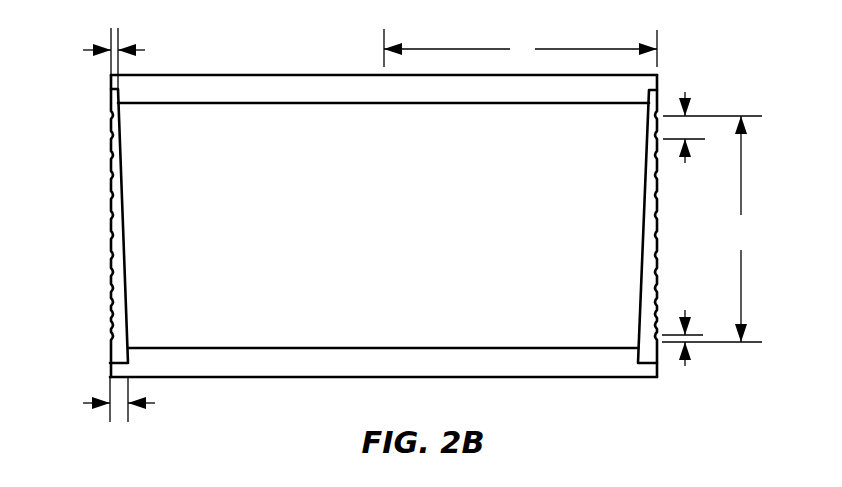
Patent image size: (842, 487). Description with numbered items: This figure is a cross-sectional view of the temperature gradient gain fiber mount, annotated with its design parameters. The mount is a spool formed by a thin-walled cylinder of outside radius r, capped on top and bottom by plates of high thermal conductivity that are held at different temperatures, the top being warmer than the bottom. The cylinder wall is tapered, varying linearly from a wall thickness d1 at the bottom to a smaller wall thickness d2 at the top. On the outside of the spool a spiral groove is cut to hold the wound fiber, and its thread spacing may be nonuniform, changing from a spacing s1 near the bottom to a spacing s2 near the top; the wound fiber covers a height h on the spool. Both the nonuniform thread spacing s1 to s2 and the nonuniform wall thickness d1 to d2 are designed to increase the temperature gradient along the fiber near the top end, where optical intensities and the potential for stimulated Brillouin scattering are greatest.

The wall thickness at top d2 is at (97, 58).
The wall thickness at bottom d1 is at (102, 399).
The outside radius of the spool r is at (520, 48).
The height covered by the fiber h is at (742, 229).
The thread spacing at top s2 is at (712, 143).
The thread spacing at bottom s1 is at (712, 353).